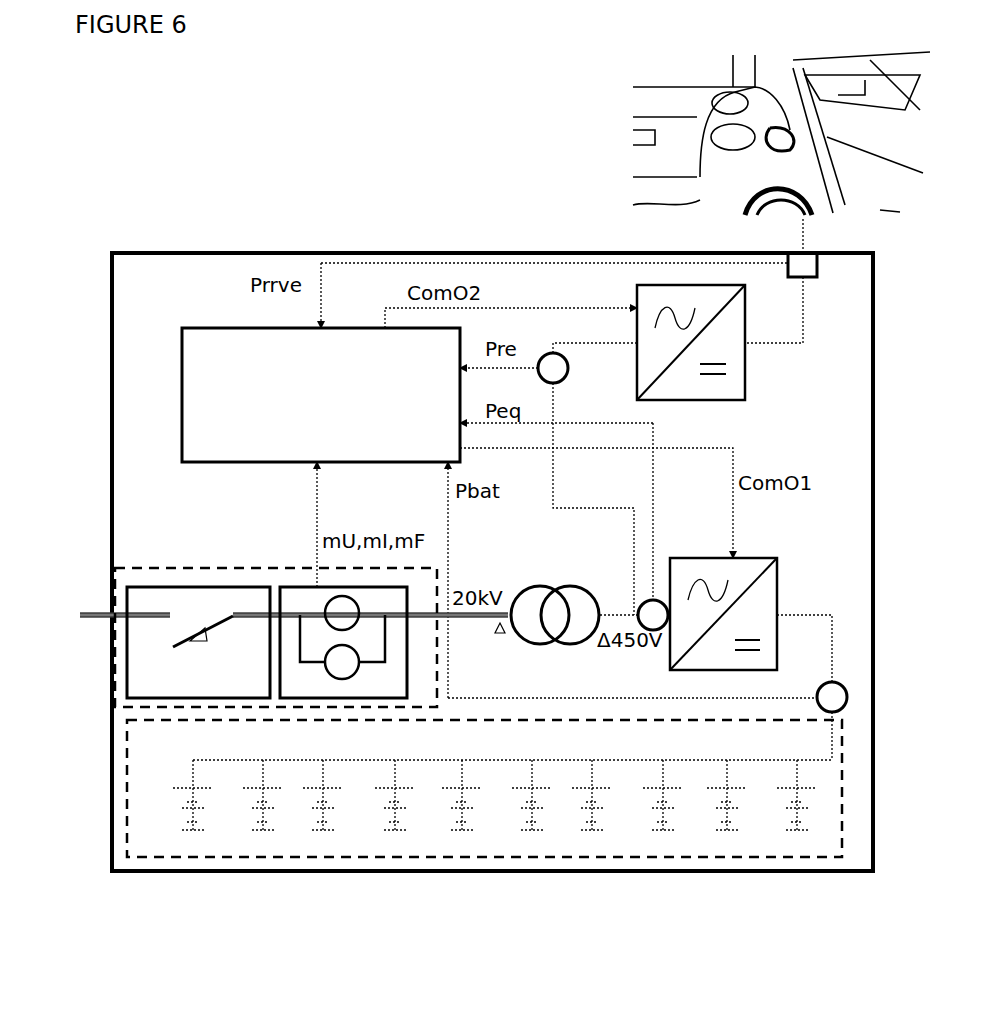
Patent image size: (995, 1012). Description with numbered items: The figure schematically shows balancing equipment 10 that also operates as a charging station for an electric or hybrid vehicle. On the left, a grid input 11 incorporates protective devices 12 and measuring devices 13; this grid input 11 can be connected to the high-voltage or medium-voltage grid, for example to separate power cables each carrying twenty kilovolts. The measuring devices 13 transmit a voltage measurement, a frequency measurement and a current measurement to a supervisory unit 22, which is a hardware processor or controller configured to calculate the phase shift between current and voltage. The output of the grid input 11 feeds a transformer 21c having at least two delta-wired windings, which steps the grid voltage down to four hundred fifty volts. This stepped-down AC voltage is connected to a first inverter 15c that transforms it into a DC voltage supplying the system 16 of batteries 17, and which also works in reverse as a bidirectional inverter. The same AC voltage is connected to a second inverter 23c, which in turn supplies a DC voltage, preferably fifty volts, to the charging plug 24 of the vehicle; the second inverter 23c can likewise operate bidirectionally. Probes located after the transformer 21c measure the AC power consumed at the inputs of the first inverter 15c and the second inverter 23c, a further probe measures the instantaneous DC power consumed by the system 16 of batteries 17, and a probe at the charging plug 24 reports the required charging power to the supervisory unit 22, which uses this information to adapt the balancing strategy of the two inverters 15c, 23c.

The balancing equipment 10 is at (271, 252).
The grid input 11 is at (143, 567).
The protective devices 12 is at (197, 586).
The measuring devices 13 is at (283, 586).
The first inverter 15c is at (690, 640).
The system of batteries 16 is at (562, 858).
The batteries 17 is at (197, 832).
The transformer 21c is at (538, 569).
The supervisory unit 22 is at (321, 395).
The second inverter 23c is at (745, 355).
The charging plug 24 is at (812, 277).